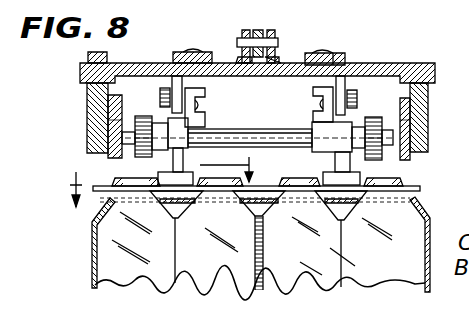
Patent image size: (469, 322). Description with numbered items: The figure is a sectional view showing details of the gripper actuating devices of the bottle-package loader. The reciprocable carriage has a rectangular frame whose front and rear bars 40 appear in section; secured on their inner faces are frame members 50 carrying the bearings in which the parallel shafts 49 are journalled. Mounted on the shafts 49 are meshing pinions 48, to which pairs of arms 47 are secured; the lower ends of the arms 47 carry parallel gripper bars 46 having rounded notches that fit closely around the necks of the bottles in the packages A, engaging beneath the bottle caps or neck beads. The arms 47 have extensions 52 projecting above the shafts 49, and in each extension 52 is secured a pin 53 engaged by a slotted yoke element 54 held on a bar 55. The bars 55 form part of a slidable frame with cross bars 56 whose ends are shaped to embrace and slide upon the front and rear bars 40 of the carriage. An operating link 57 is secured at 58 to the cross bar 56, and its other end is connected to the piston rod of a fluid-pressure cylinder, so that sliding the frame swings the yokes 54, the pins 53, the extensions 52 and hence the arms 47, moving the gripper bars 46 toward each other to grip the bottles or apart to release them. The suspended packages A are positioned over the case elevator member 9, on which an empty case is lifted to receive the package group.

The elevator member 9 is at (168, 182).
The front and rear bars 40 is at (87, 95).
The parallel bars 46 is at (90, 208).
The arms 47 is at (165, 163).
The pinions 48 is at (136, 117).
The shafts 49 is at (272, 137).
The frame members 50 is at (87, 120).
The extensions 52 is at (312, 98).
The pin 53 is at (206, 101).
The slotted yoke elements 54 is at (176, 78).
The bars 55 is at (201, 51).
The cross bars 56 is at (376, 63).
The operating link 57 is at (248, 32).
The securing point 58 is at (275, 32).
The bottle packages A is at (428, 207).